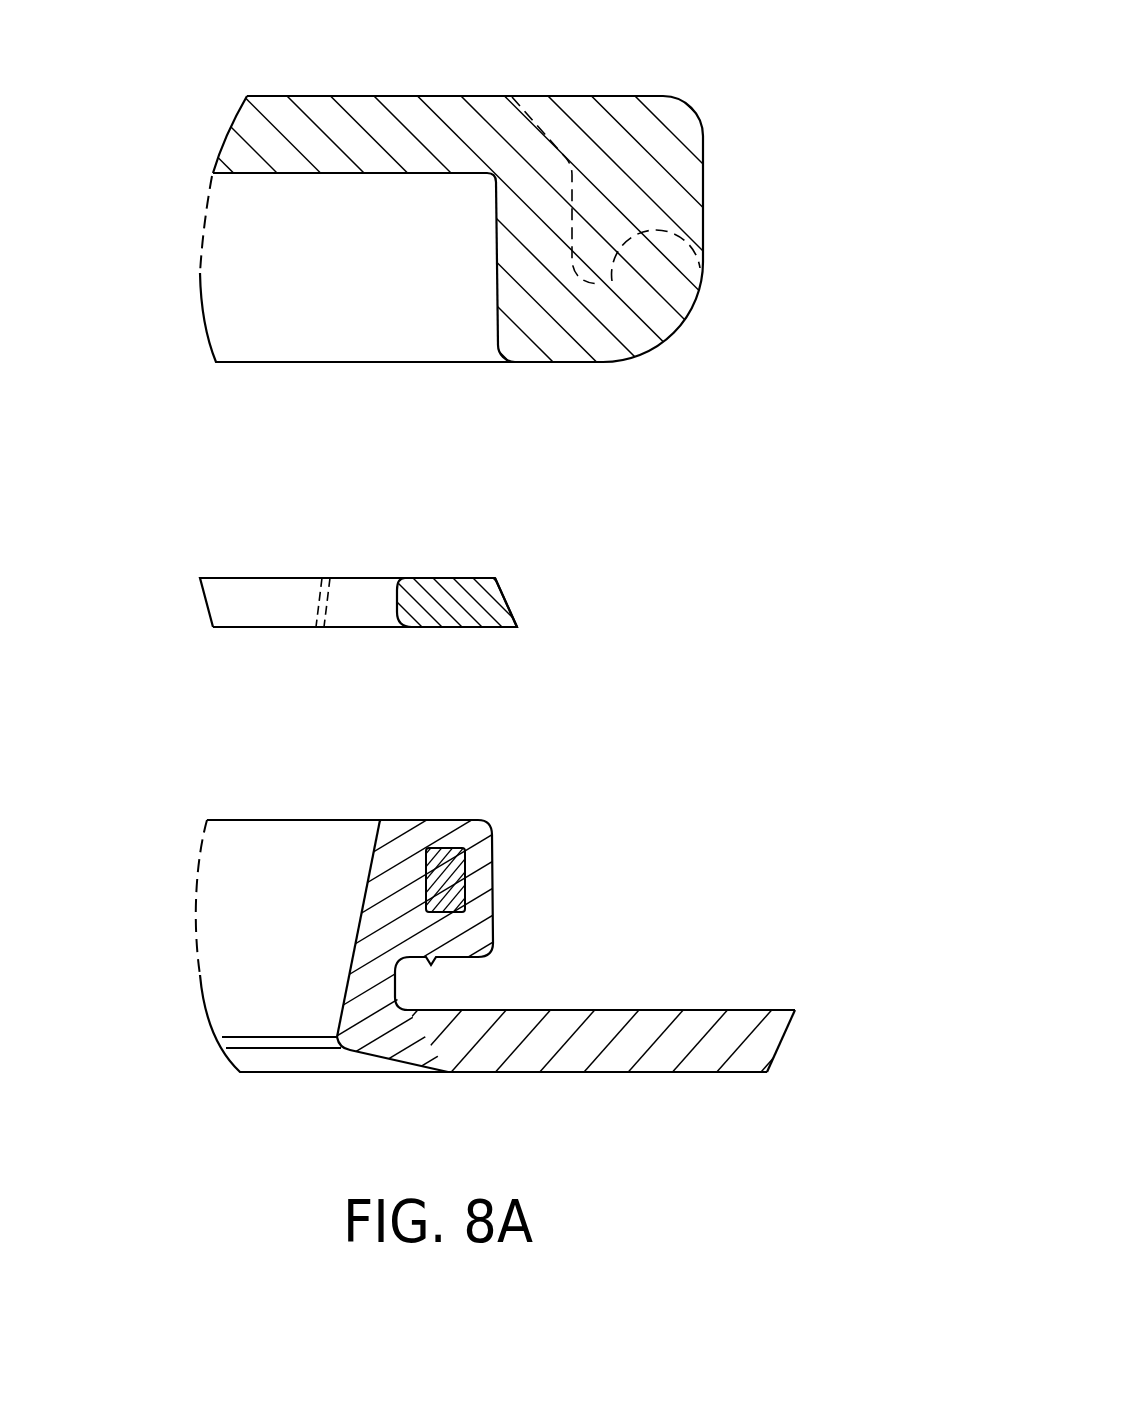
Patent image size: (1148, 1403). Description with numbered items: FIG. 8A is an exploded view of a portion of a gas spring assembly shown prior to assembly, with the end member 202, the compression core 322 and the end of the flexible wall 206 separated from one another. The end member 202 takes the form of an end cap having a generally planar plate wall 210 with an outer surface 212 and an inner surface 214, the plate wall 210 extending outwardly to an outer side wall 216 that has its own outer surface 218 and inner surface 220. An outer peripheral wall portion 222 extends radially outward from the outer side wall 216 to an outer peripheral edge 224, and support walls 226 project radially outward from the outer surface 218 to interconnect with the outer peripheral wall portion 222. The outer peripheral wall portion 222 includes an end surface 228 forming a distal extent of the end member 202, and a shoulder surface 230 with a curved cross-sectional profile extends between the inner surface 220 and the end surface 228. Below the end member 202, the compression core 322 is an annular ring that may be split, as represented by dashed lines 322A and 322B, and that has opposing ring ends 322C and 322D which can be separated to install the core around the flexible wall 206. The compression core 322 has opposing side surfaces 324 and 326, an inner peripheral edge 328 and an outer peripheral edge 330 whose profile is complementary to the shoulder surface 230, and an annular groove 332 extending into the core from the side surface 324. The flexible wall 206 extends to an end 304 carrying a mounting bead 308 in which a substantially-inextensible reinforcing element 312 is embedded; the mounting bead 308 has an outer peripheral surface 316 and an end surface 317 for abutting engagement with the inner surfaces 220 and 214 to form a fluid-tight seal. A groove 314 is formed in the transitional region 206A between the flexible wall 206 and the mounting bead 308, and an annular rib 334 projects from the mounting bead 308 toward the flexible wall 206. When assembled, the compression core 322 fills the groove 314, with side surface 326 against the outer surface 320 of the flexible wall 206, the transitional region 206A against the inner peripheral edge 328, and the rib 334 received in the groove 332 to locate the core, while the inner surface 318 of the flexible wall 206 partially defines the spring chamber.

The end member 202 is at (662, 72).
The plate wall 210 is at (308, 128).
The outer surface 212 is at (402, 96).
The inner surface 214 is at (267, 175).
The outer side wall 216 is at (531, 222).
The outer surface 218 is at (590, 165).
The inner surface 220 is at (497, 248).
The outer peripheral wall portion 222 is at (637, 333).
The outer peripheral edge 224 is at (697, 290).
The support walls 226 is at (658, 178).
The end surface 228 is at (551, 366).
The shoulder surface 230 is at (506, 346).
The compression core 322 is at (457, 612).
The dashed line 322A is at (317, 602).
The dashed line 322B is at (328, 604).
The ring end 322C is at (242, 612).
The ring end 322D is at (355, 582).
The side surface 324 is at (473, 577).
The side surface 326 is at (500, 630).
The inner peripheral edge 328 is at (395, 602).
The outer peripheral edge 330 is at (502, 605).
The annular groove 332 is at (445, 585).
The end 304 is at (267, 1087).
The mounting bead 308 is at (383, 910).
The transitional region 206A is at (363, 980).
The end surface 317 is at (427, 820).
The outer peripheral surface 316 is at (493, 904).
The annular rib 334 is at (433, 957).
The reinforcing element 312 is at (447, 867).
The groove 314 is at (467, 983).
The outer surface 320 is at (680, 1010).
The inner surface 318 is at (650, 1073).
The flexible wall 206 is at (783, 1000).